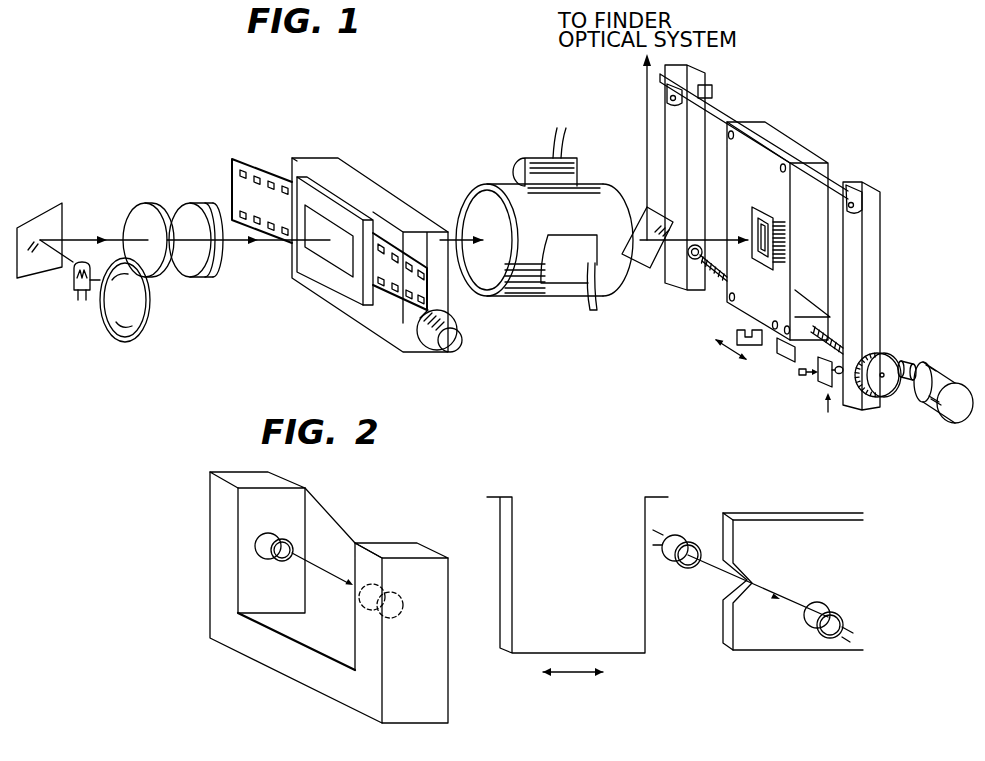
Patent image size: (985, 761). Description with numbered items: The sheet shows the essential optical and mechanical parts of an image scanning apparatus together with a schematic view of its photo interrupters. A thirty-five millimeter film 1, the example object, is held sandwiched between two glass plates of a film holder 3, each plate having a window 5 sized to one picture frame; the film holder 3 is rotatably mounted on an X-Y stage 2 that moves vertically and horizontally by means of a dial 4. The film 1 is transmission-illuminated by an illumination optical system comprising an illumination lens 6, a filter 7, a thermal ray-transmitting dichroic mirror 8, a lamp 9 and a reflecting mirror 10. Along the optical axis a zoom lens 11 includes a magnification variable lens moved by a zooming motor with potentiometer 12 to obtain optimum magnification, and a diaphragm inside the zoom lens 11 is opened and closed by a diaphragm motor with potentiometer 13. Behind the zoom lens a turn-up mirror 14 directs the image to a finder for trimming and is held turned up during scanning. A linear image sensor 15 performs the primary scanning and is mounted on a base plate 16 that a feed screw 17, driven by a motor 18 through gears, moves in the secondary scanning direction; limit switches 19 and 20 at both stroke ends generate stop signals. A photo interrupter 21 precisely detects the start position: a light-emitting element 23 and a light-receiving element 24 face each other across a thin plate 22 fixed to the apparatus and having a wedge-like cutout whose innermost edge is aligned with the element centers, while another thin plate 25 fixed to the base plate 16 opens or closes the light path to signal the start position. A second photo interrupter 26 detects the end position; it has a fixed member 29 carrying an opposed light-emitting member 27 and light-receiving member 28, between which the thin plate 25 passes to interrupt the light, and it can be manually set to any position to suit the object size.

In FIG. 1, the film 1 is at (244, 162).
In FIG. 1, the X-Y stage 2 is at (323, 160).
In FIG. 1, the film holder 3 is at (333, 280).
In FIG. 1, the dial 4 is at (460, 342).
In FIG. 1, the window 5 is at (318, 248).
In FIG. 1, the illumination lens 6 is at (178, 210).
In FIG. 1, the filter 7 is at (142, 212).
In FIG. 1, the thermal ray-transmitting dichroic mirror 8 is at (52, 218).
In FIG. 1, the lamp 9 is at (72, 284).
In FIG. 1, the reflecting mirror 10 is at (110, 318).
In FIG. 1, the zoom lens 11 is at (520, 294).
In FIG. 1, the potentiometer 12 is at (536, 157).
In FIG. 1, the diaphragm motor with potentiometer 13 is at (598, 276).
In FIG. 1, the turn-up mirror 14 is at (643, 268).
In FIG. 1, the linear image sensor 15 is at (756, 208).
In FIG. 1, the base plate 16 is at (743, 150).
In FIG. 1, the feed screw 17 is at (850, 335).
In FIG. 1, the motor 18 is at (920, 408).
In FIG. 1, the limit switch 19 is at (713, 92).
In FIG. 1, the limit switch 20 is at (848, 174).
In FIG. 1, the photo interrupter 21 is at (829, 414).
In FIG. 1, the thin plate 22 is at (822, 383).
In FIG. 2, the thin plate 22 is at (797, 537).
In FIG. 1, the light-emitting element 23 is at (841, 375).
In FIG. 2, the light-emitting element 23 is at (678, 534).
In FIG. 1, the light-receiving element 24 is at (802, 378).
In FIG. 2, the light-receiving element 24 is at (823, 607).
In FIG. 1, the thin plate 25 is at (781, 352).
In FIG. 2, the thin plate 25 is at (627, 633).
In FIG. 1, the photo interrupter 26 is at (737, 334).
In FIG. 2, the light-emitting member 27 is at (273, 538).
In FIG. 2, the light-receiving member 28 is at (372, 584).
In FIG. 2, the fixed member 29 is at (305, 522).